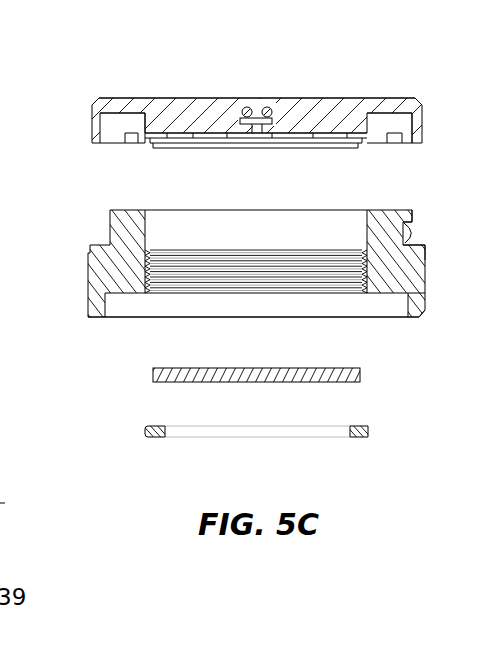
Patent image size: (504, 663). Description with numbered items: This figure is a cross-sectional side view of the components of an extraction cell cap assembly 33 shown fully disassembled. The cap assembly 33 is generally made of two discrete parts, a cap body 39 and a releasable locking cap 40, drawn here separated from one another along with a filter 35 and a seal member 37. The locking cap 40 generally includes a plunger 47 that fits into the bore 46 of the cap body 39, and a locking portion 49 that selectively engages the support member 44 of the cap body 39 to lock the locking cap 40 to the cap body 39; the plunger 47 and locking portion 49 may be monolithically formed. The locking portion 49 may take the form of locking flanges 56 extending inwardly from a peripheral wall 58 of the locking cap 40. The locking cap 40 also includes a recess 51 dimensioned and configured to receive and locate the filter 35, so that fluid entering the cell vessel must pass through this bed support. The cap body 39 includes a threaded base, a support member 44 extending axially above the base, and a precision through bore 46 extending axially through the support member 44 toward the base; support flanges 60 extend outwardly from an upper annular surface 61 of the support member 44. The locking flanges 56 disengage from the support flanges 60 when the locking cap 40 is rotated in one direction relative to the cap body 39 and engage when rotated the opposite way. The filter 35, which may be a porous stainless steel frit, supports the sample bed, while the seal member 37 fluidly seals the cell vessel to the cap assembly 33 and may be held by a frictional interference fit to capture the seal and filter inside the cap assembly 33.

The cell cap assembly 33 is at (292, 55).
The locking cap 40 is at (349, 92).
The peripheral wall 58 is at (92, 125).
The locking portion 49 is at (422, 125).
The locking flange 56 is at (402, 137).
The recess 51 is at (213, 143).
The plunger 47 is at (302, 127).
The support member 44 is at (125, 220).
The precision through bore 46 is at (147, 243).
The support flange 60 is at (412, 212).
The upper annular surface 61 is at (426, 252).
The cap body 39 is at (436, 312).
The filter 35 is at (160, 372).
The seal member 37 is at (152, 428).